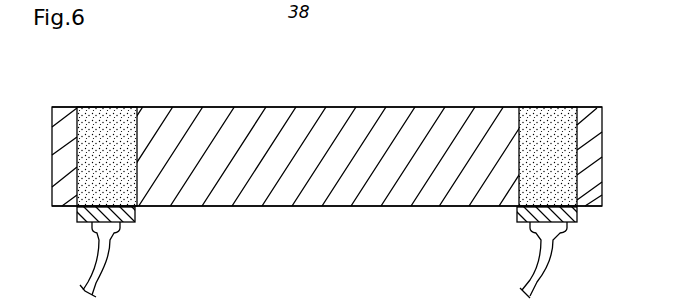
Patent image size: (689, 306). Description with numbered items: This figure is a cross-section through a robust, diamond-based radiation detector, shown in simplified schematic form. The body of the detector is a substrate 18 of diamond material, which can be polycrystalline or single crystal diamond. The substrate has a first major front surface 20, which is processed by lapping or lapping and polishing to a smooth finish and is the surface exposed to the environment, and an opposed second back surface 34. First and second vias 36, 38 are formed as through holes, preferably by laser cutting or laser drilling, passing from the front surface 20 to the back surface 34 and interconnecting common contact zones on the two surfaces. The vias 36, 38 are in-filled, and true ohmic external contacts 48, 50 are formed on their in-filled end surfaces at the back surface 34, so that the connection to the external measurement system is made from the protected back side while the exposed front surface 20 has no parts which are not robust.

The substrate 18 is at (375, 197).
The first major surface 20 is at (460, 107).
The back surface 34 is at (490, 208).
The first via 36 is at (104, 107).
The second via 38 is at (549, 107).
The external contact 48 is at (136, 215).
The external contact 50 is at (570, 222).